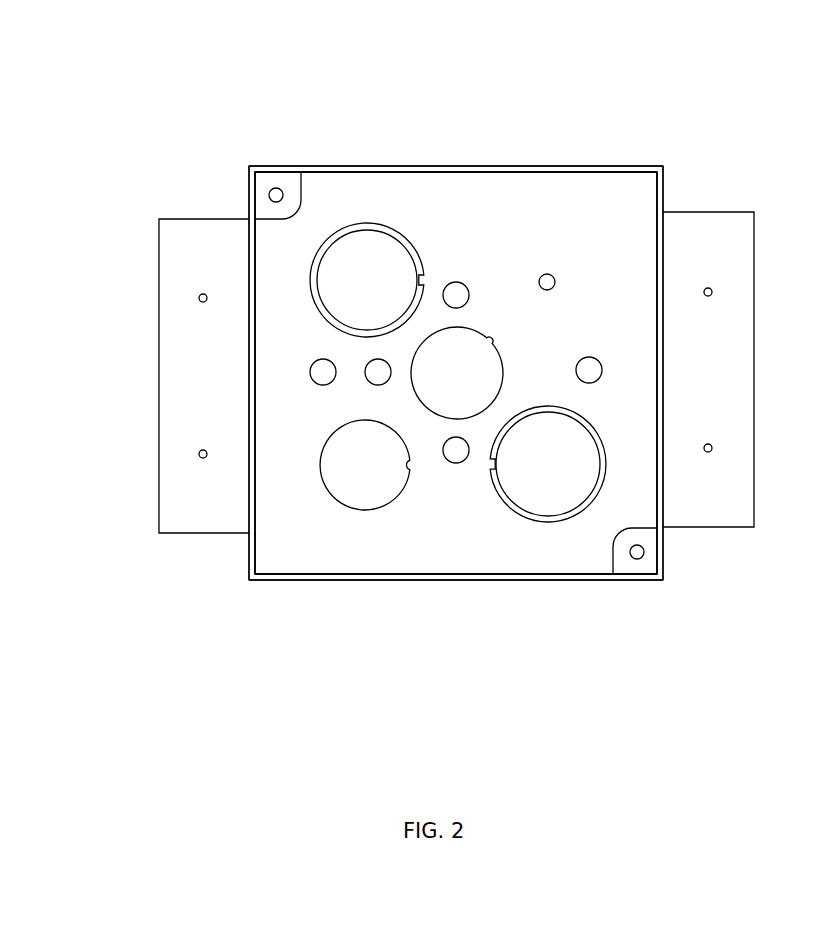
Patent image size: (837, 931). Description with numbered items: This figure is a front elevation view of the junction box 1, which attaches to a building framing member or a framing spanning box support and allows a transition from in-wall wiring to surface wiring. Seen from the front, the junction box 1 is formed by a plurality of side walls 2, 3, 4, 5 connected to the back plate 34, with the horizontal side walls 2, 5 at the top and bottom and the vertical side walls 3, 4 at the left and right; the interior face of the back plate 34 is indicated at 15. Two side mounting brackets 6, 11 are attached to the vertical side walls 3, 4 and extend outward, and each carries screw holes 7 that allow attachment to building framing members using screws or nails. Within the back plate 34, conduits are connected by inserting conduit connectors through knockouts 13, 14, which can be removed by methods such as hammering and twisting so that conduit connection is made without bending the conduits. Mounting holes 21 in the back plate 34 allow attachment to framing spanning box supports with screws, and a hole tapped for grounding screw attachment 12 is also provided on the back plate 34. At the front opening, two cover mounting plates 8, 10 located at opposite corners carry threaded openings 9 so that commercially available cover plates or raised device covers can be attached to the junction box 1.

The junction box 1 is at (666, 163).
The side wall 2 is at (467, 166).
The side wall 3 is at (668, 196).
The side wall 4 is at (247, 562).
The side wall 5 is at (439, 583).
The side mounting bracket 6 is at (728, 371).
The screw holes 7 is at (196, 300).
The cover mounting plate 8 is at (648, 559).
The threaded openings 9 is at (276, 187).
The cover mounting plate 10 is at (260, 191).
The side mounting bracket 11 is at (197, 389).
The hole tapped for grounding screw attachment 12 is at (549, 274).
The knockouts 13 is at (462, 370).
The knockouts 14 is at (370, 278).
The back plate 15 is at (332, 538).
The mounting holes 21 is at (456, 290).
The back plate 34 is at (488, 221).